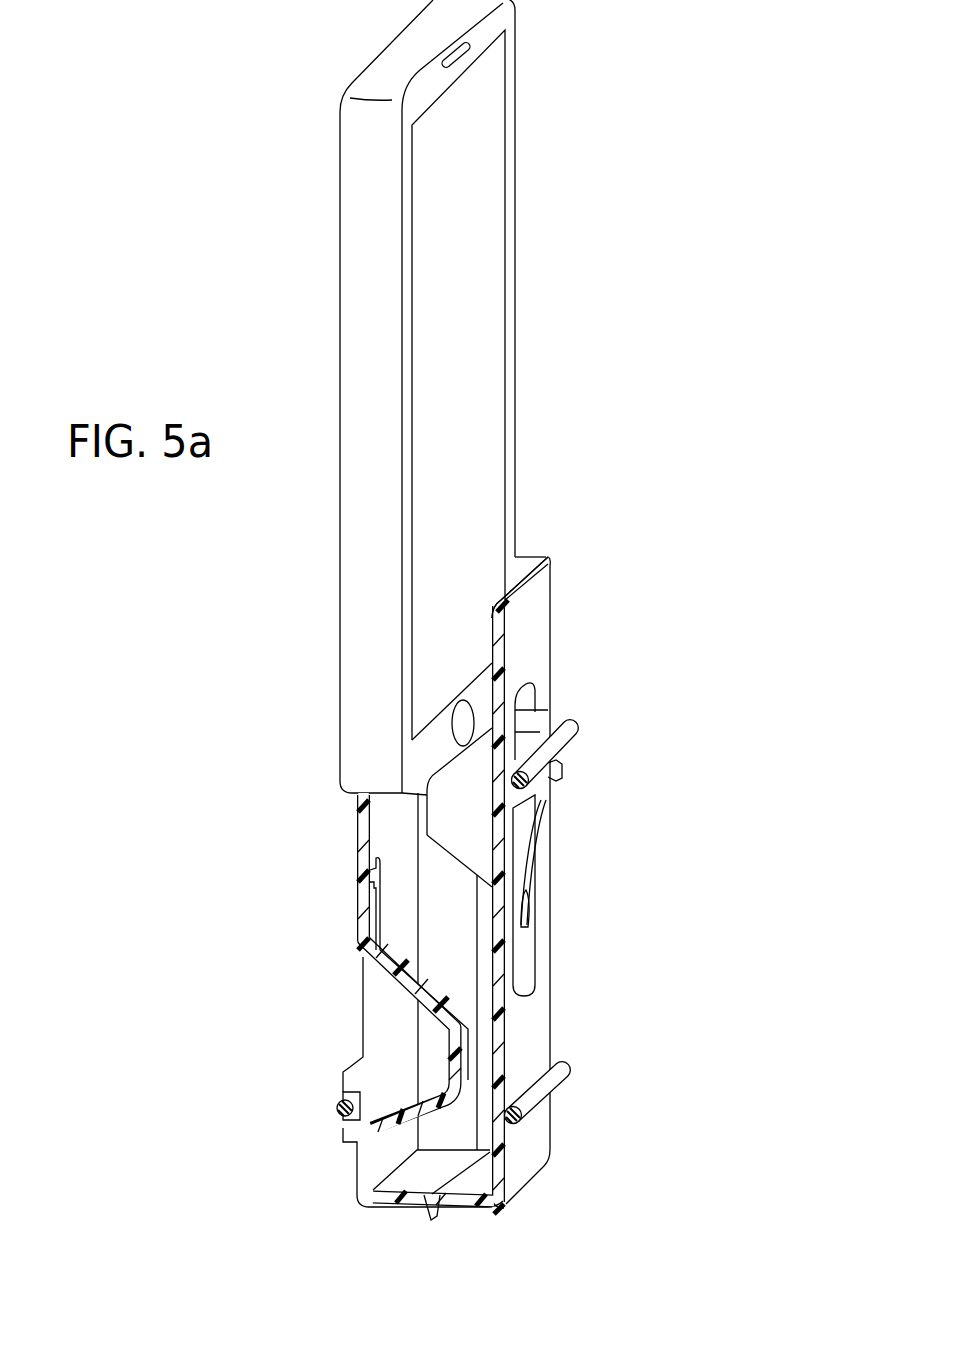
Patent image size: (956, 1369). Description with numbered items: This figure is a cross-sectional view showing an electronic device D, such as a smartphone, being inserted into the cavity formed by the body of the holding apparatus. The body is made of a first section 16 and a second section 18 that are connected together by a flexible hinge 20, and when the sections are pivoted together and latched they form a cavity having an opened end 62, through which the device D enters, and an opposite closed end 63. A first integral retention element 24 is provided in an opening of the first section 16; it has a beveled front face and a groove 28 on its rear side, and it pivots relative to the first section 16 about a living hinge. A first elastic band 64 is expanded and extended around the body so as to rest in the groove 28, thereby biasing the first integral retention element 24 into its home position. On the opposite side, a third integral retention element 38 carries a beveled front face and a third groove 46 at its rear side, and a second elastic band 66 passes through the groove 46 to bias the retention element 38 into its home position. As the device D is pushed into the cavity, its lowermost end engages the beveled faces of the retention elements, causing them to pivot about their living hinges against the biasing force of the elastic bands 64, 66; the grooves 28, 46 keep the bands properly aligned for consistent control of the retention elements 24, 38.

The electronic device D is at (515, 283).
The first section 16 is at (357, 858).
The second section 18 is at (532, 1024).
The flexible hinge 20 is at (422, 1212).
The first integral retention element 24 is at (448, 1062).
The groove 28 is at (348, 1098).
The third integral retention element 38 is at (448, 814).
The third groove 46 is at (566, 794).
The opened end 62 is at (527, 563).
The closed end 63 is at (462, 1206).
The first elastic band 64 is at (335, 1107).
The second elastic band 66 is at (537, 742).